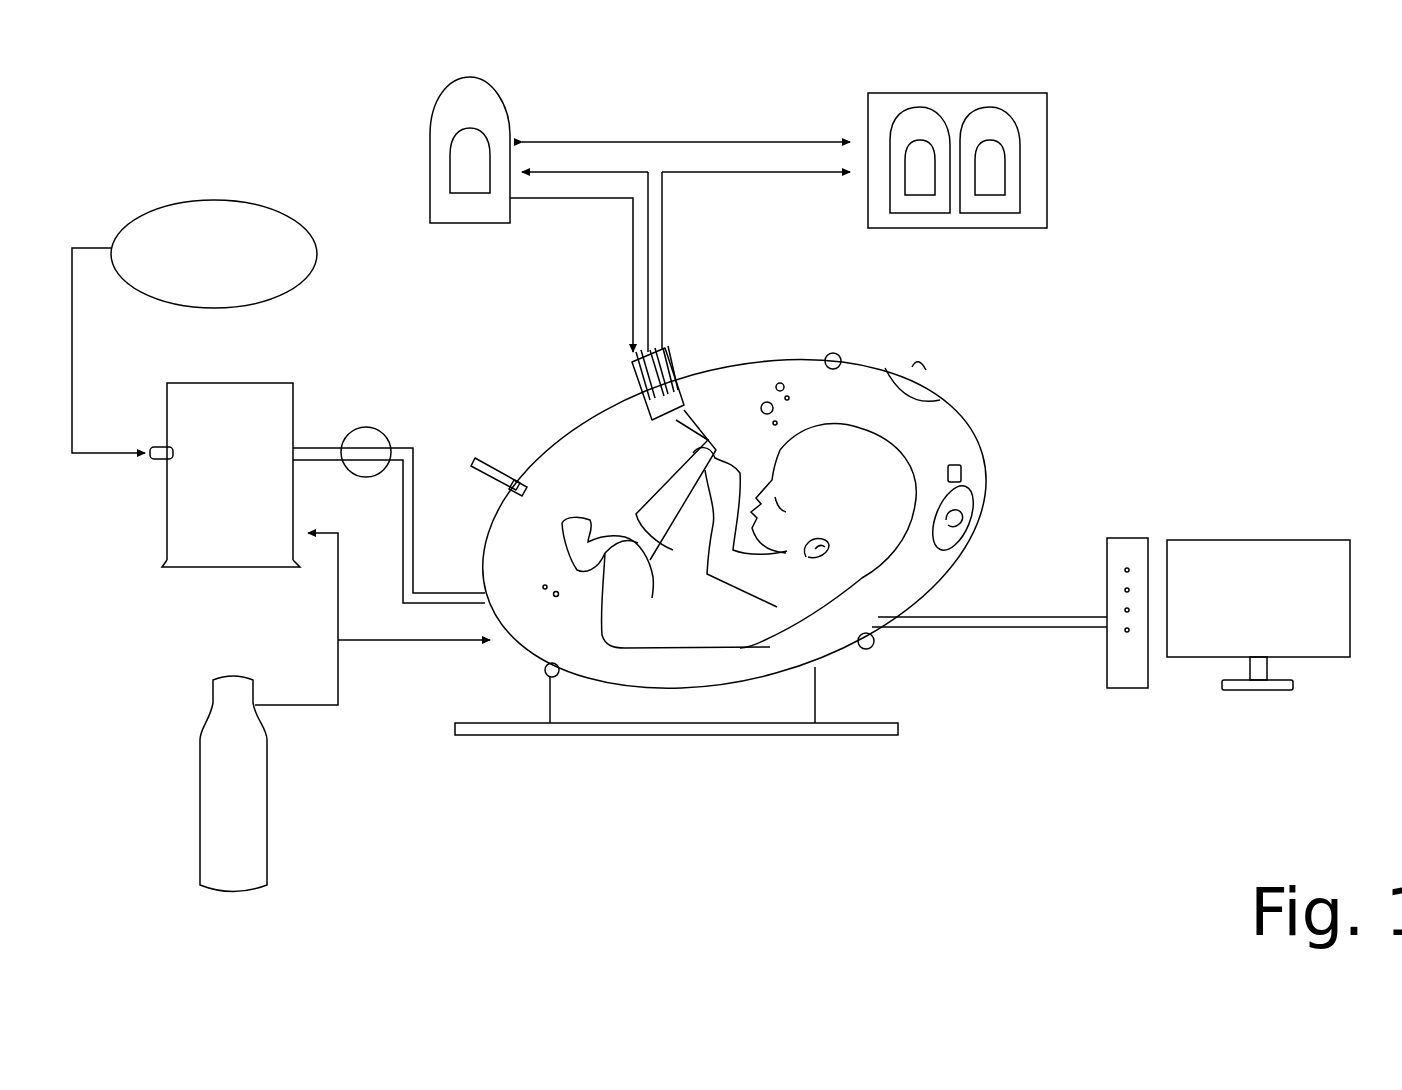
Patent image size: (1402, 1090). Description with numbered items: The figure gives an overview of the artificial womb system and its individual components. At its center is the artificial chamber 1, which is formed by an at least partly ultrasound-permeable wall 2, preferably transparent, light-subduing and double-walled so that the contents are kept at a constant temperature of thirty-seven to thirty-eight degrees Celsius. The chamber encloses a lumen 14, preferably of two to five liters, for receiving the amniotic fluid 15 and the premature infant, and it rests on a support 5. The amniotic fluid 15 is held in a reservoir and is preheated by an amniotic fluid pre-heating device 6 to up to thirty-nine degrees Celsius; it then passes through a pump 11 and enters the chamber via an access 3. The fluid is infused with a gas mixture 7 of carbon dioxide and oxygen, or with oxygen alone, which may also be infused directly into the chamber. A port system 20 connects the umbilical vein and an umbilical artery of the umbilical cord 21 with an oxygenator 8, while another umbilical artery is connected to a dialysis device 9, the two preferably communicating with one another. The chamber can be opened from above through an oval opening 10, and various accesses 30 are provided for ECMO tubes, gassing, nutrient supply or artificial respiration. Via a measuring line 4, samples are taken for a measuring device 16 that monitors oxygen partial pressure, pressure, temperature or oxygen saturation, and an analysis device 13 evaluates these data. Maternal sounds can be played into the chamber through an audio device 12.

The artificial chamber 1 is at (942, 445).
The ultrasound-permeable wall 2 is at (851, 356).
The access 3 is at (475, 592).
The measuring line 4 is at (953, 622).
The support stand 5 is at (771, 697).
The amniotic fluid pre-heating device 6 is at (265, 393).
The gas mixture 7 is at (210, 757).
The oxygenator 8 is at (488, 112).
The dialysis device 9 is at (1022, 113).
The oval opening 10 is at (927, 388).
The pump 11 is at (366, 480).
The audio device 12 is at (968, 500).
The analysis device 13 is at (1279, 560).
The lumen 14 is at (848, 414).
The amniotic fluid 15 is at (224, 192).
The measuring device 16 is at (1128, 667).
The port system 20 is at (667, 370).
The umbilical cord 21 is at (650, 490).
The accesses 30 is at (503, 475).